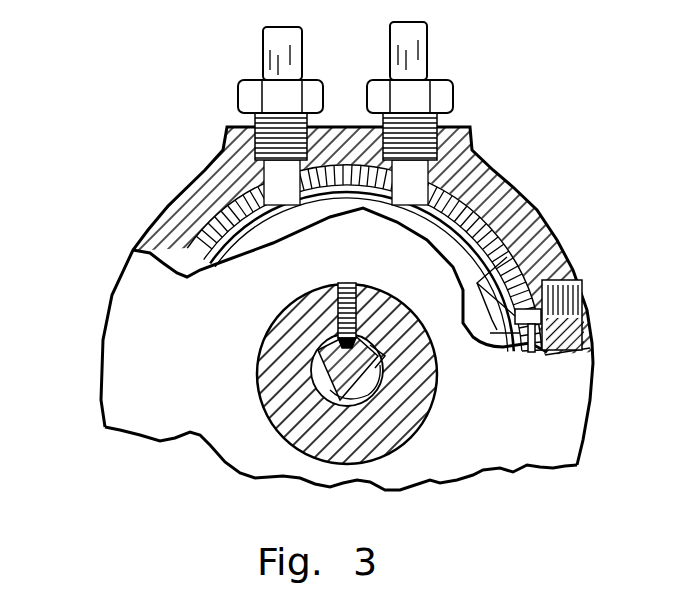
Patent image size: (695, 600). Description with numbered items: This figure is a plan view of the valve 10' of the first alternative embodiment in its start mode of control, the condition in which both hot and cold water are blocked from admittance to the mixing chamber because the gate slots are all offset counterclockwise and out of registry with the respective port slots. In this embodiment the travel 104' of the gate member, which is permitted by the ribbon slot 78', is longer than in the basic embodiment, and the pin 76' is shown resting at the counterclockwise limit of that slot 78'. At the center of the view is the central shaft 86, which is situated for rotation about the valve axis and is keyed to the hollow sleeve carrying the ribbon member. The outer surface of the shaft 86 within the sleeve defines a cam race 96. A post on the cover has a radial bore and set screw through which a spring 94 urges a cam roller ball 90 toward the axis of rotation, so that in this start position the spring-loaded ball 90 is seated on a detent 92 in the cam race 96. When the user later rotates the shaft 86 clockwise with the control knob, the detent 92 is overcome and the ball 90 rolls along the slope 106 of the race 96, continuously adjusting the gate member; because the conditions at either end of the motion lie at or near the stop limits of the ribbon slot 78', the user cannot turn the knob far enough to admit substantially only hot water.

The valve 10' is at (370, 281).
The travel 104' is at (421, 258).
The slot 78' is at (612, 292).
The pin 76' is at (580, 304).
The spring 94 is at (350, 334).
The cam roller ball 90 is at (340, 335).
The detent 92 is at (350, 358).
The slope 106 is at (345, 368).
The cam race 96 is at (385, 356).
The central shaft 86 is at (360, 371).